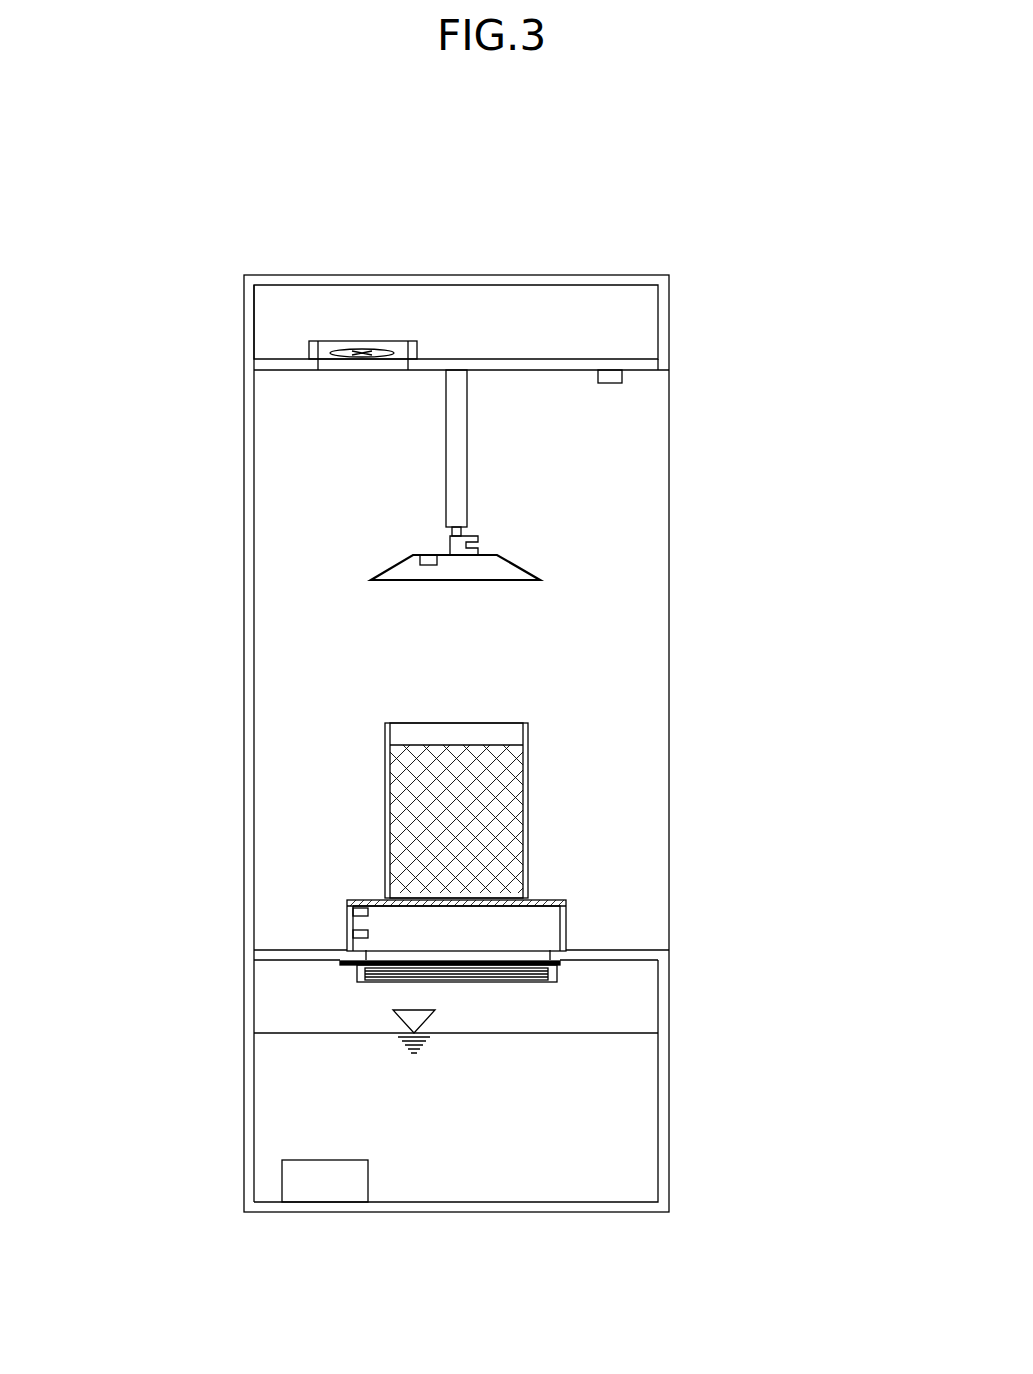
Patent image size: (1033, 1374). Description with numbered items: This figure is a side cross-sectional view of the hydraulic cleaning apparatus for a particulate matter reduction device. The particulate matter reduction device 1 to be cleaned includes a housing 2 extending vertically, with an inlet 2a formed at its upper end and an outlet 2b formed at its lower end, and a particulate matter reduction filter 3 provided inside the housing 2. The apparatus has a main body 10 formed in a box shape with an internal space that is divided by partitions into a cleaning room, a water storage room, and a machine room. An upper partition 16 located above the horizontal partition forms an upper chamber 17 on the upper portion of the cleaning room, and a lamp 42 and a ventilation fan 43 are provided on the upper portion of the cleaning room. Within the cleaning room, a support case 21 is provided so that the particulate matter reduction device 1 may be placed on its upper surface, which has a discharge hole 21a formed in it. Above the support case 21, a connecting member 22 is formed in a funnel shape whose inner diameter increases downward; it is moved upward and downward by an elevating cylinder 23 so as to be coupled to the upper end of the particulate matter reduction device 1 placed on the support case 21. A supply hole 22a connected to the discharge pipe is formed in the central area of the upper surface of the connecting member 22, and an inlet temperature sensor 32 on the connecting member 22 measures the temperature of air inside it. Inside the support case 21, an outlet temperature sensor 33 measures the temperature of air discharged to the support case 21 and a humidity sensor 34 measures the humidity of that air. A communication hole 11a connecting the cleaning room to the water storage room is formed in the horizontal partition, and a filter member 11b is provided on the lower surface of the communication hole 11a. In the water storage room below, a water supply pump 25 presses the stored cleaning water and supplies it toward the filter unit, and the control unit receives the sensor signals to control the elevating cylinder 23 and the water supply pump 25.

The particulate matter reduction device 1 is at (542, 722).
The housing 2 is at (528, 805).
The inlet 2a is at (390, 730).
The outlet 2b is at (400, 893).
The particulate matter reduction filter 3 is at (493, 760).
The main body 10 is at (244, 505).
The communication hole 11a is at (540, 950).
The filter member 11b is at (513, 982).
The upper partition 16 is at (270, 361).
The upper chamber 17 is at (316, 298).
The support case 21 is at (555, 900).
The discharge hole 21a is at (490, 906).
The connecting member 22 is at (413, 558).
The supply hole 22a is at (460, 555).
The elevating cylinder 23 is at (446, 446).
The water supply pump 25 is at (368, 1180).
The inlet temperature sensor 32 is at (428, 555).
The outlet temperature sensor 33 is at (358, 905).
The humidity sensor 34 is at (368, 935).
The lamp 42 is at (610, 383).
The ventilation fan 43 is at (380, 350).